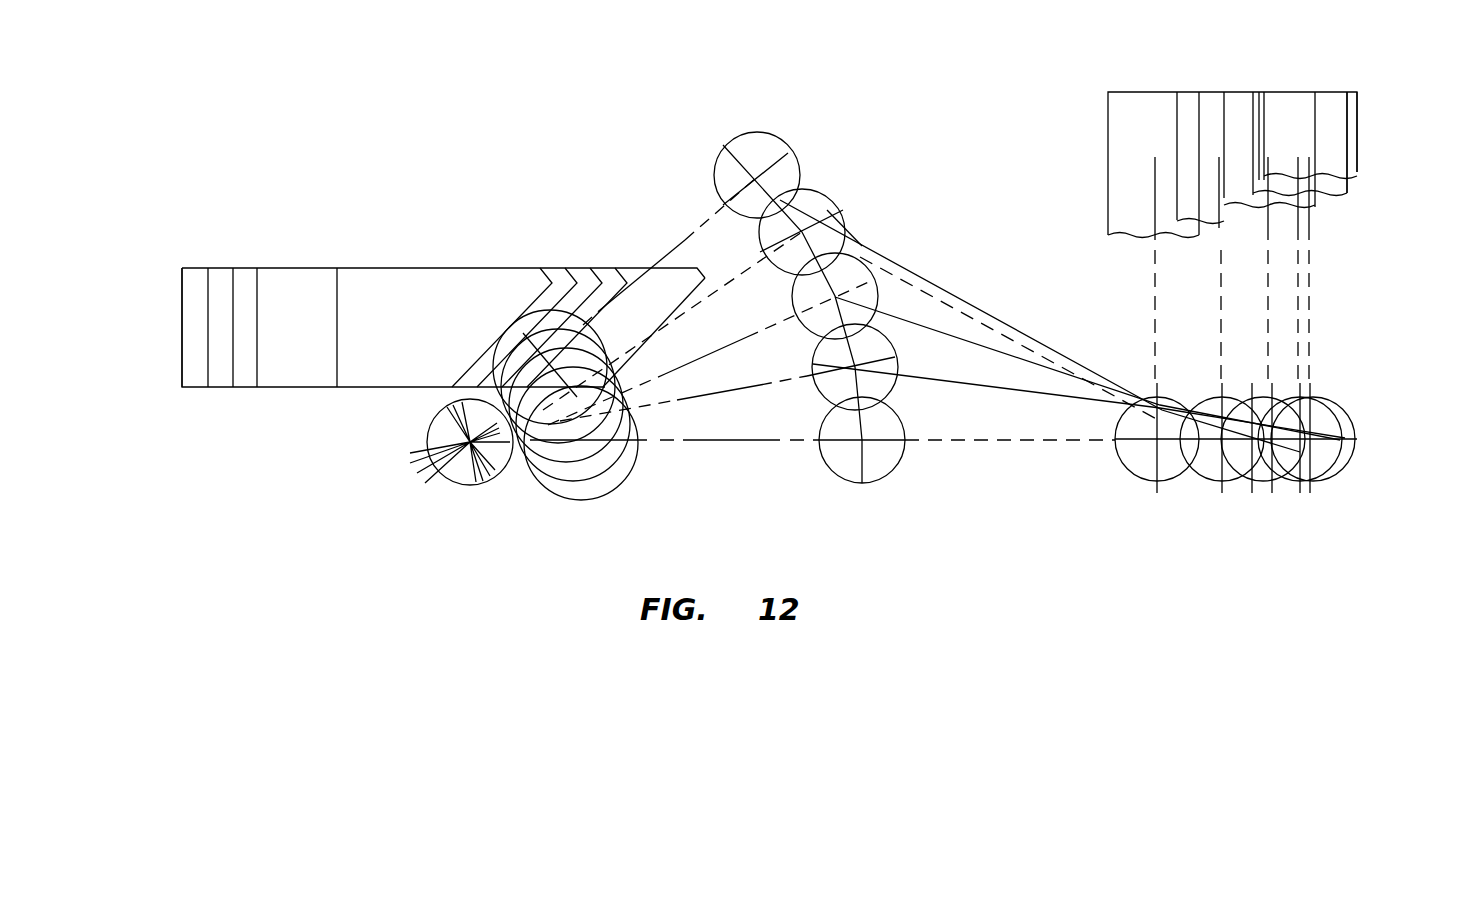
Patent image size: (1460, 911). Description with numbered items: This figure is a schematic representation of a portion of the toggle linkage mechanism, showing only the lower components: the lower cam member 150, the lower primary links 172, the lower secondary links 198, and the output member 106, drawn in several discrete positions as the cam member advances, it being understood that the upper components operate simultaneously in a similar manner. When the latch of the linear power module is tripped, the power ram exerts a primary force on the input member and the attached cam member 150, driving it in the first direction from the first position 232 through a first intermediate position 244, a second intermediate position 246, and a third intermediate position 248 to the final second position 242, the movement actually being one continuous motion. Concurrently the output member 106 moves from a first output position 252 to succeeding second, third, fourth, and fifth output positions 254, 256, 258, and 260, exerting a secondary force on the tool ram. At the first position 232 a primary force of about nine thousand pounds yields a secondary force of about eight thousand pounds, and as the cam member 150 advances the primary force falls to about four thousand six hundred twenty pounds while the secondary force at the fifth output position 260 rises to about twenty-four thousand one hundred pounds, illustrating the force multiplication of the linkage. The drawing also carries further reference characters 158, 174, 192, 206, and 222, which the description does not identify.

The output member 106 is at (1153, 92).
The lower cam member 150 is at (407, 255).
The slanted facet 158 is at (678, 320).
The lower primary links 172 is at (700, 445).
The light source 174 is at (445, 502).
The lens column 192 is at (853, 478).
The lower secondary links 198 is at (1027, 442).
The lens array 206 is at (1157, 485).
The lens 222 is at (578, 500).
The first position 232 is at (182, 385).
The second position 242 is at (333, 383).
The first intermediate position 244 is at (206, 384).
The second intermediate position 246 is at (231, 383).
The third intermediate position 248 is at (254, 383).
The first output position 252 is at (1200, 230).
The second output position 254 is at (1263, 212).
The third output position 256 is at (1318, 198).
The fourth output position 258 is at (1358, 182).
The fifth output position 260 is at (1358, 124).